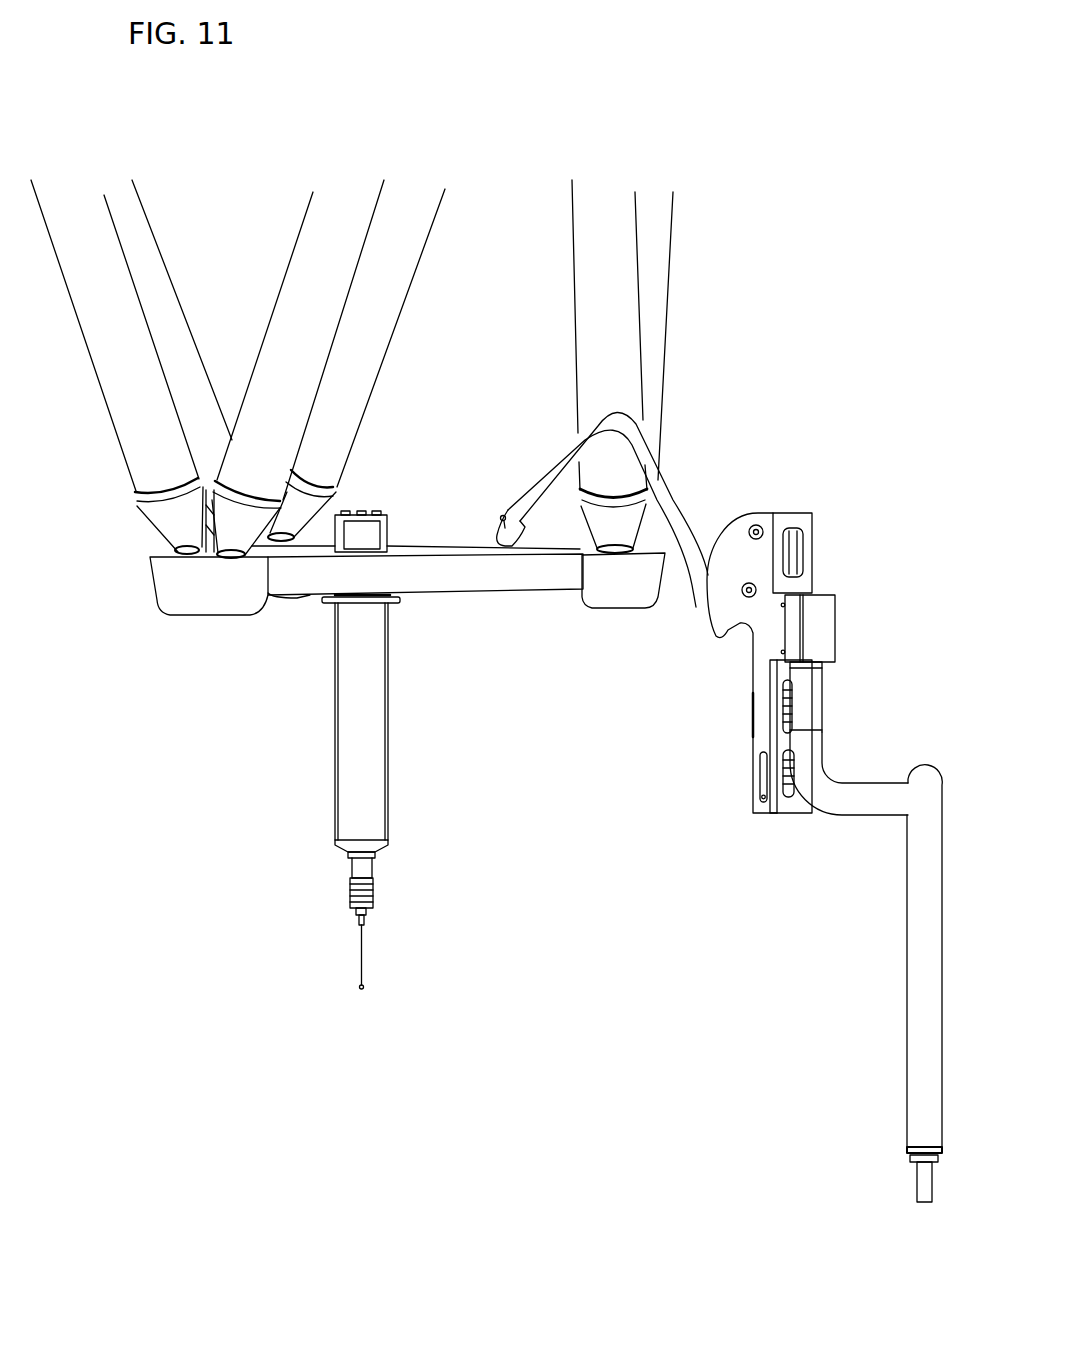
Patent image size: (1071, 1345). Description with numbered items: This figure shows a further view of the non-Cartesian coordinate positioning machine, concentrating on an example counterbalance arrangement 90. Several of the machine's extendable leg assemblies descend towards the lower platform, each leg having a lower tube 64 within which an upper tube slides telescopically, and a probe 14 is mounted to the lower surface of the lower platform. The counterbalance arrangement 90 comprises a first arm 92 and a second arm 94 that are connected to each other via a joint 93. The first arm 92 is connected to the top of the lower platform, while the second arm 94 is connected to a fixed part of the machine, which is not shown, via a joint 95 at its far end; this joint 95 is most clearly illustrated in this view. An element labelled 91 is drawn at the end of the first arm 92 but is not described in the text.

The probe 14 is at (389, 733).
The lower tube 64 is at (671, 243).
The counterbalance arrangement 90 is at (725, 883).
The hook 91 is at (501, 515).
The first arm 92 is at (673, 500).
The joint 93 is at (820, 594).
The second arm 94 is at (907, 983).
The joint 95 is at (910, 1162).